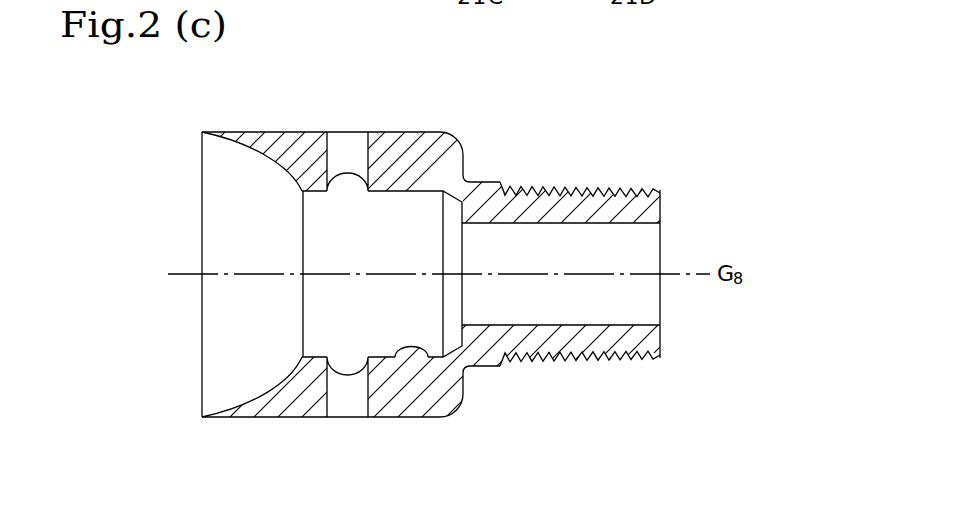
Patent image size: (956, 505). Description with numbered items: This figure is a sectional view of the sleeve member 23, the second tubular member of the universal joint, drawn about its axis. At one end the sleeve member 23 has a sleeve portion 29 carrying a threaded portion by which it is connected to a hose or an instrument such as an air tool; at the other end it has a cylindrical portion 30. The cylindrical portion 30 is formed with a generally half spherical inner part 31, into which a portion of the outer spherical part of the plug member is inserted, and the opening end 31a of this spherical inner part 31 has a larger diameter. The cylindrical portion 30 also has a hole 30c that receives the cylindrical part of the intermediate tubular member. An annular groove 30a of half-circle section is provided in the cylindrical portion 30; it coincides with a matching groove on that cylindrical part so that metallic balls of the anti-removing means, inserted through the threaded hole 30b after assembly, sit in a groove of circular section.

The sleeve member 23 is at (619, 150).
The sleeve portion 29 is at (548, 205).
The cylindrical portion 30 is at (390, 147).
The annular groove 30a is at (350, 418).
The threaded hole 30b is at (347, 143).
The hole 30c is at (430, 362).
The half spherical inner part 31 is at (241, 134).
The opening end 31a is at (201, 143).